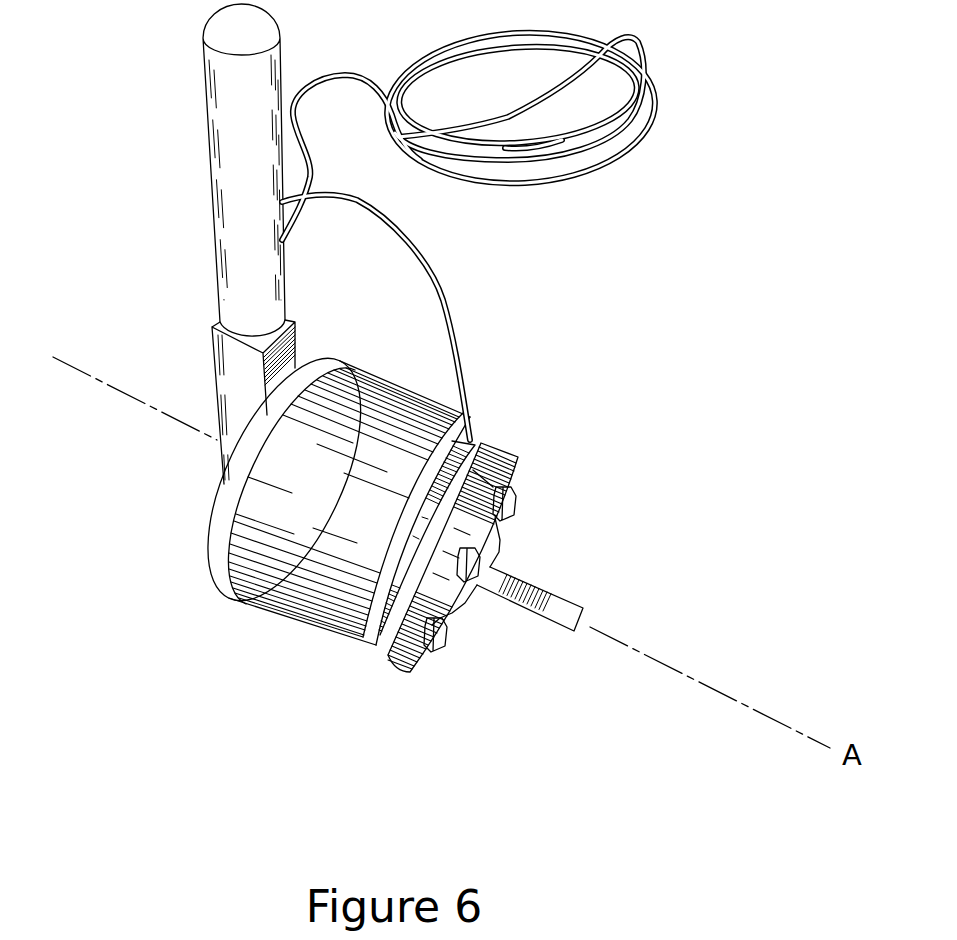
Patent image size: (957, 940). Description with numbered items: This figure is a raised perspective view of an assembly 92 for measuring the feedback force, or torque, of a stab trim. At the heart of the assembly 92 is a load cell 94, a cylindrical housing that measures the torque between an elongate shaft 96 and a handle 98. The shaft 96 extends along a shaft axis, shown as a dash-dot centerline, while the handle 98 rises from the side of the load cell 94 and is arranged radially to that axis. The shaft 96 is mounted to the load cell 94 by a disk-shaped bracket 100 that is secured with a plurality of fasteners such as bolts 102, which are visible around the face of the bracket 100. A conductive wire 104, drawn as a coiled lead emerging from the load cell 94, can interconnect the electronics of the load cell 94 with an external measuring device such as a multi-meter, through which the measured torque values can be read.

The assembly 92 is at (423, 563).
The load cell 94 is at (272, 538).
The elongate shaft 96 is at (563, 607).
The handle 98 is at (243, 263).
The disk-shaped bracket 100 is at (403, 658).
The bolts 102 is at (512, 503).
The conductive wire 104 is at (462, 292).